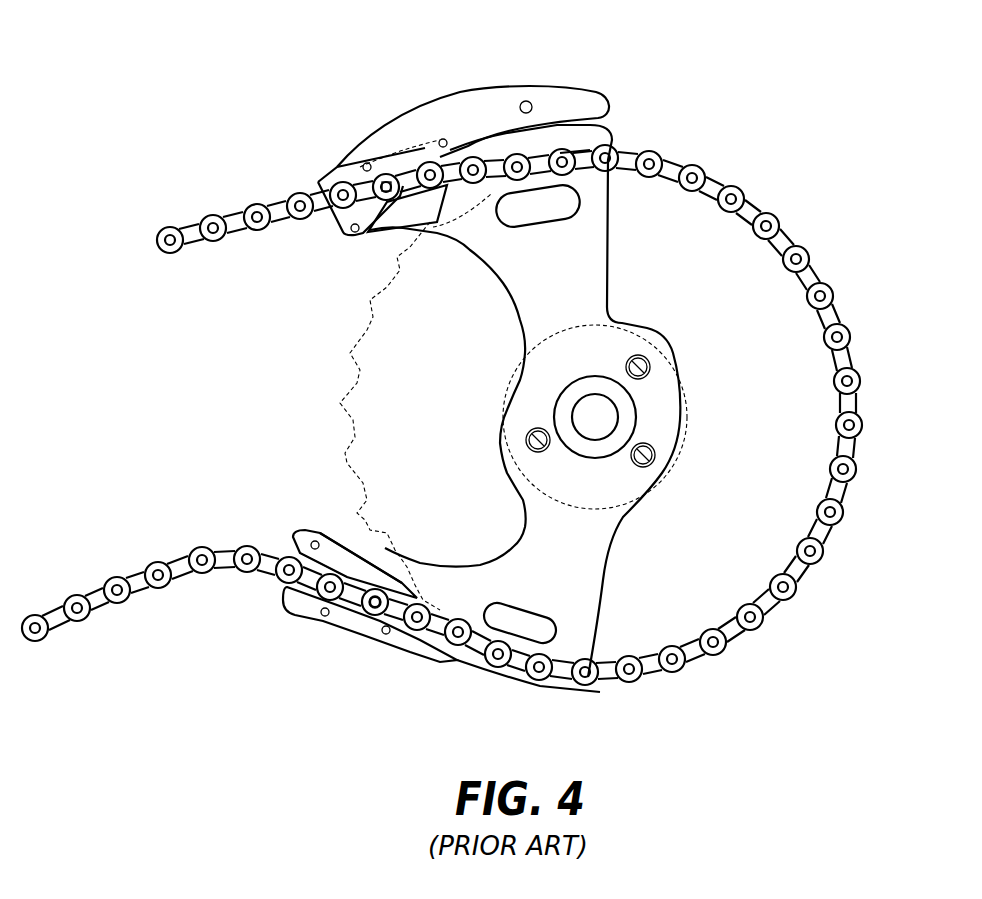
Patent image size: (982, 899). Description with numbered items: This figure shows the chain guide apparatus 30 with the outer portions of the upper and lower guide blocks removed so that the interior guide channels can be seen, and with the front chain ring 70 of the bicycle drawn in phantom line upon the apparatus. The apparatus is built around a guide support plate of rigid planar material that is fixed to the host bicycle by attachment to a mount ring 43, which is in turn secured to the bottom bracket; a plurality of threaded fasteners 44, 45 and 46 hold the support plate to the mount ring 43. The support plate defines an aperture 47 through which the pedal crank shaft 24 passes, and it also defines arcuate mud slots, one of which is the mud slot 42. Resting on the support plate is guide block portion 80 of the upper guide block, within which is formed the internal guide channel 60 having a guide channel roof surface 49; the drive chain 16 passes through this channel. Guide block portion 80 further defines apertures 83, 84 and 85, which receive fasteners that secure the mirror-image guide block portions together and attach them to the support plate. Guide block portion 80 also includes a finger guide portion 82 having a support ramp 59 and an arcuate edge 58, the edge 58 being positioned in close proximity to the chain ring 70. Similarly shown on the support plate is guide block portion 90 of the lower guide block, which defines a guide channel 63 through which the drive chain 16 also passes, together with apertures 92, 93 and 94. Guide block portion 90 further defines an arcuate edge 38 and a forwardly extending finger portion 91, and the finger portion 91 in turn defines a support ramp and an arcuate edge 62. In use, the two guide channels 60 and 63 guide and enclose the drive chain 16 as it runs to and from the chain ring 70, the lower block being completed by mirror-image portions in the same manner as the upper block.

The drive chain 16 is at (772, 212).
The pedal crank shaft 24 is at (608, 440).
The chain guide apparatus 30 is at (503, 382).
The arcuate edge 38 is at (383, 618).
The arcuate mud slot 42 is at (563, 637).
The mount ring 43 is at (687, 417).
The threaded fastener 44 is at (537, 450).
The threaded fastener 45 is at (647, 380).
The threaded fastener 46 is at (648, 447).
The aperture 47 is at (593, 380).
The guide channel roof surface 49 is at (388, 183).
The arcuate edge 58 is at (447, 228).
The support ramp 59 is at (445, 203).
The internal guide channel 60 is at (337, 219).
The arcuate edge 62 is at (408, 562).
The guide channel 63 is at (300, 553).
The chain ring 70 is at (345, 403).
The guide block portion 80 is at (508, 83).
The finger guide portion 82 is at (388, 246).
The aperture 83 is at (368, 163).
The aperture 84 is at (352, 232).
The aperture 85 is at (444, 139).
The guide block portion 90 is at (300, 617).
The finger portion 91 is at (355, 558).
The aperture 92 is at (313, 540).
The aperture 93 is at (326, 618).
The aperture 94 is at (387, 636).